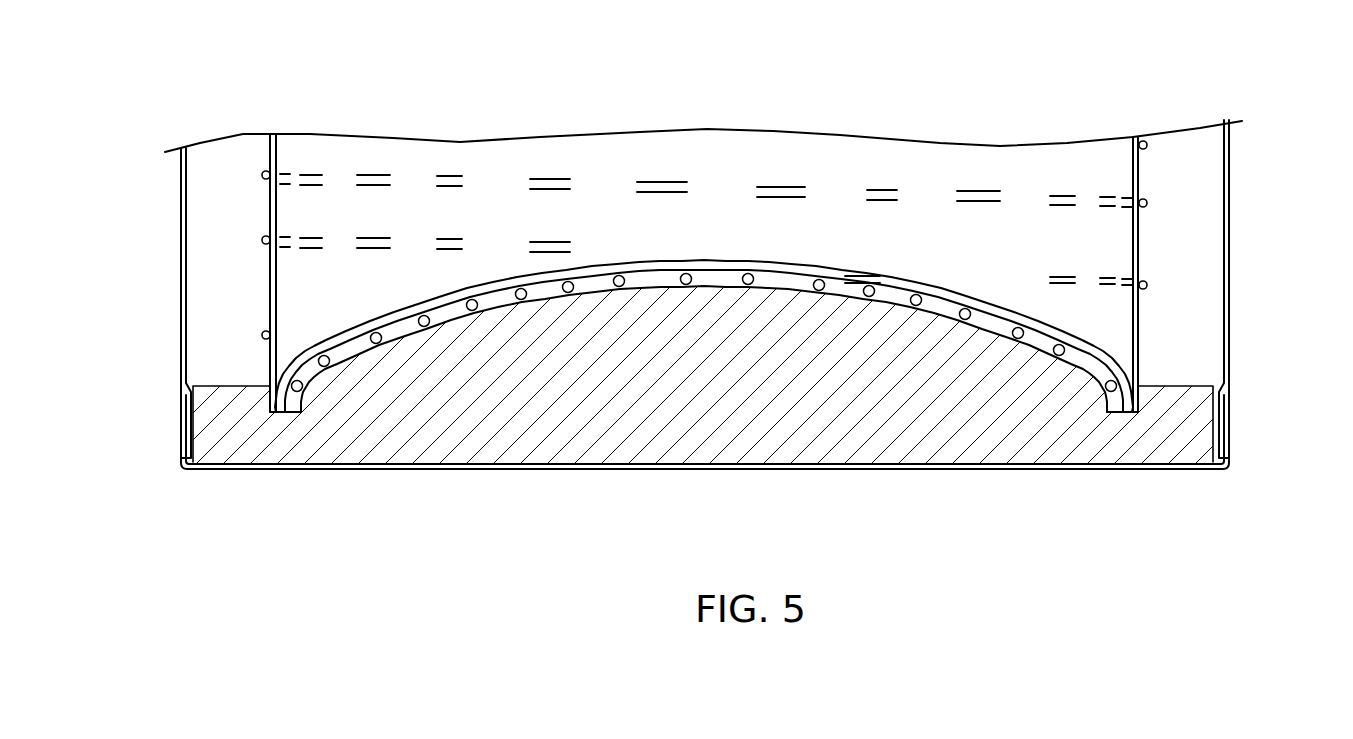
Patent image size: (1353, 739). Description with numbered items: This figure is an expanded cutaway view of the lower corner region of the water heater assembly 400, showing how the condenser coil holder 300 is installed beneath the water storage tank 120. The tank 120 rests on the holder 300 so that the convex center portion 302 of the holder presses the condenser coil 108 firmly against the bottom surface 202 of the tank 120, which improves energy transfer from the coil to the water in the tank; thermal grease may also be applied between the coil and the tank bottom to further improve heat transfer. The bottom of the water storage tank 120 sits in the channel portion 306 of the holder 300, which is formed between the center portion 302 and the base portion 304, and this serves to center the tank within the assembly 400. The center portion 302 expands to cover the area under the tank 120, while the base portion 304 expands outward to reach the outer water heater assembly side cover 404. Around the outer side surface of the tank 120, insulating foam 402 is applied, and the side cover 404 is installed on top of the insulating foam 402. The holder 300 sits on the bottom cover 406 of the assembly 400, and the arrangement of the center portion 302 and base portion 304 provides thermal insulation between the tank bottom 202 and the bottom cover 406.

The water heater assembly 400 is at (1140, 53).
The condenser coil 108 is at (378, 165).
The water storage tank 120 is at (746, 174).
The bottom surface 202 is at (612, 262).
The convex center portion 302 is at (770, 290).
The condenser coil holder 300 is at (606, 418).
The base portion 304 is at (236, 432).
The channel portion 306 is at (290, 412).
The insulating foam 402 is at (226, 255).
The outer water heater assembly side cover 404 is at (182, 290).
The bottom cover 406 is at (275, 470).